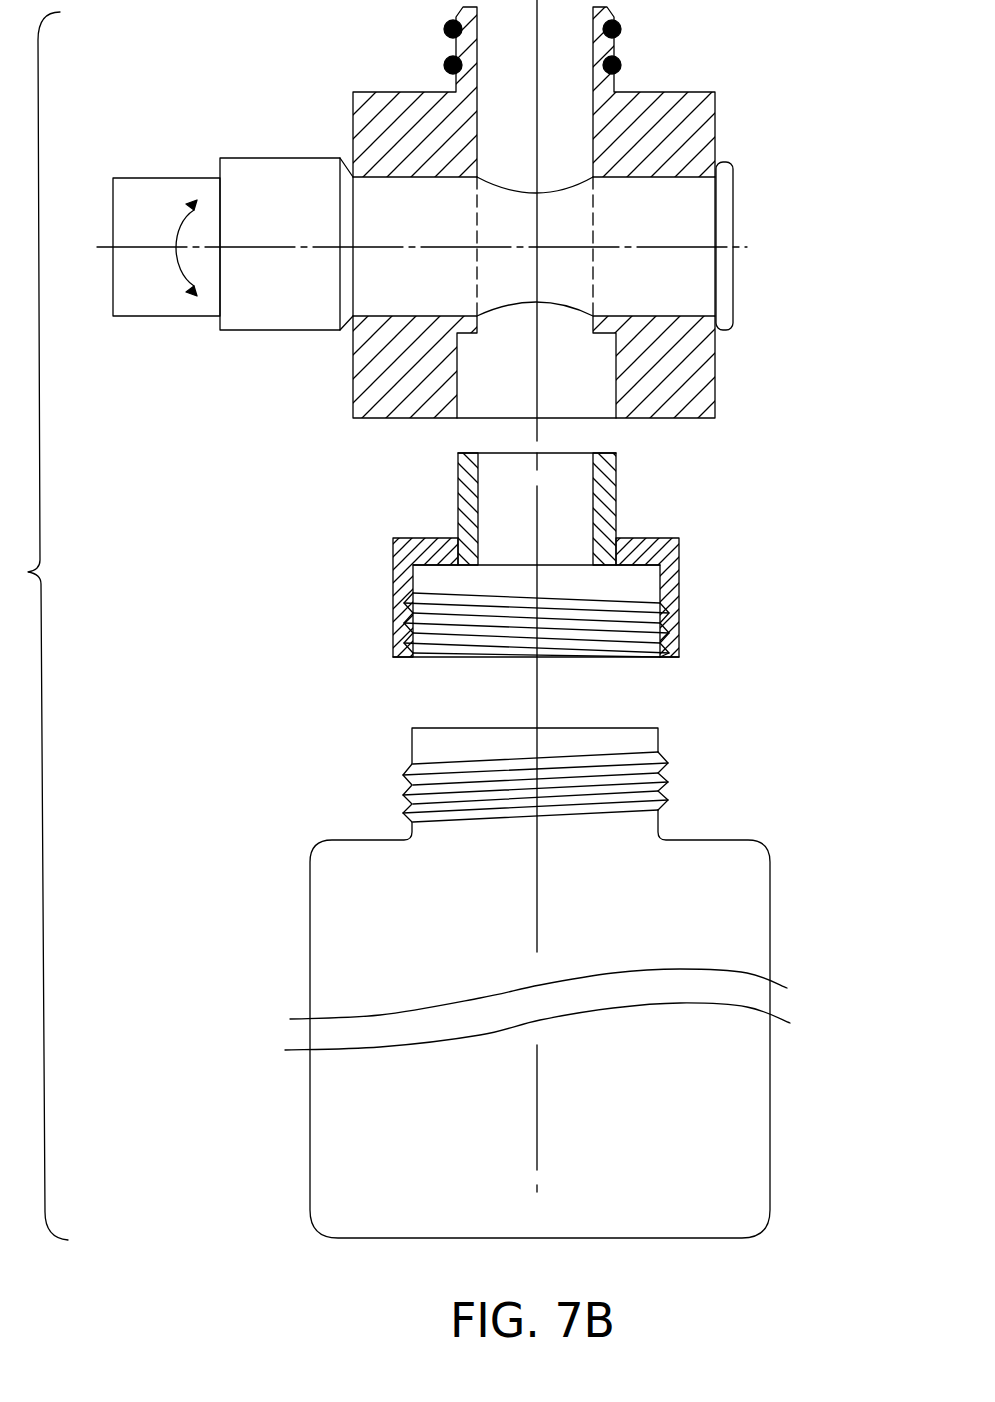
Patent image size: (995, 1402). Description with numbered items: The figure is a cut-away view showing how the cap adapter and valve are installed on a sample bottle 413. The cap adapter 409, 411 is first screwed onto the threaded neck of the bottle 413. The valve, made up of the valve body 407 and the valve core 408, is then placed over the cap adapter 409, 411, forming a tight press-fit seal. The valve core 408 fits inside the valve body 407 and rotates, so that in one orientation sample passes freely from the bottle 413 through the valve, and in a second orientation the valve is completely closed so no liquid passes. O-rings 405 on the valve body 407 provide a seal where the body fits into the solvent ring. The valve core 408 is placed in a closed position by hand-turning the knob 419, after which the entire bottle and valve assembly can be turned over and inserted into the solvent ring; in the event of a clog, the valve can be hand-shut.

The O-rings 405 is at (619, 68).
The valve body 407 is at (716, 122).
The valve core 408 is at (388, 198).
The cap adapter 409 is at (616, 483).
The cap adapter 411 is at (680, 594).
The sample bottle 413 is at (309, 872).
The knob 419 is at (733, 287).